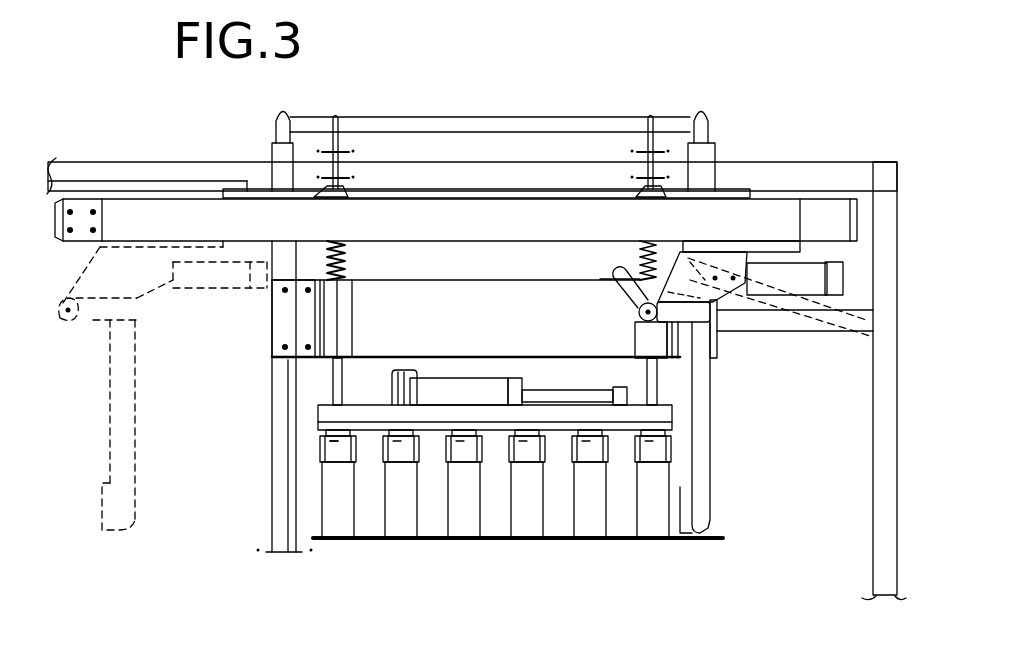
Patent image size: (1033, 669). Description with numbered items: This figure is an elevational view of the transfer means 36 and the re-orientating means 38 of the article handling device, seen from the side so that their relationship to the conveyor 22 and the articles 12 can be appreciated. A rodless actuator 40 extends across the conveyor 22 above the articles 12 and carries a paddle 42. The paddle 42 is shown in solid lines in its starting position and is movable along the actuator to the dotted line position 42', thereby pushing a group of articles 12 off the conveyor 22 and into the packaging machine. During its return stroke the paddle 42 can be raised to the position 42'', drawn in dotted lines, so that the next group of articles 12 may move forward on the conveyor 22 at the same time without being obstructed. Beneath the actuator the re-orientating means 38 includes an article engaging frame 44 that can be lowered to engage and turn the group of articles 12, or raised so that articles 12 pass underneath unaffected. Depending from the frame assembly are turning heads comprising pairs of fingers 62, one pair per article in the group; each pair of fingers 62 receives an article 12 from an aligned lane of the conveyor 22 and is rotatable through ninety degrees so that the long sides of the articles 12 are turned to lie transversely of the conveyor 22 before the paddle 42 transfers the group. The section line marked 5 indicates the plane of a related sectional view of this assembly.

The section line 5- 5 is at (665, 72).
The articles 12 is at (338, 512).
The conveyor 22 is at (488, 542).
The transfer means 36 is at (767, 204).
The re-orientating means 38 is at (236, 528).
The rodless actuator 40 is at (178, 202).
The paddle 42 is at (688, 392).
The dotted line position of paddle 42' is at (163, 385).
The raised position of paddle 42'' is at (780, 357).
The article engaging frame 44 is at (658, 418).
The pairs of fingers 62 is at (355, 438).